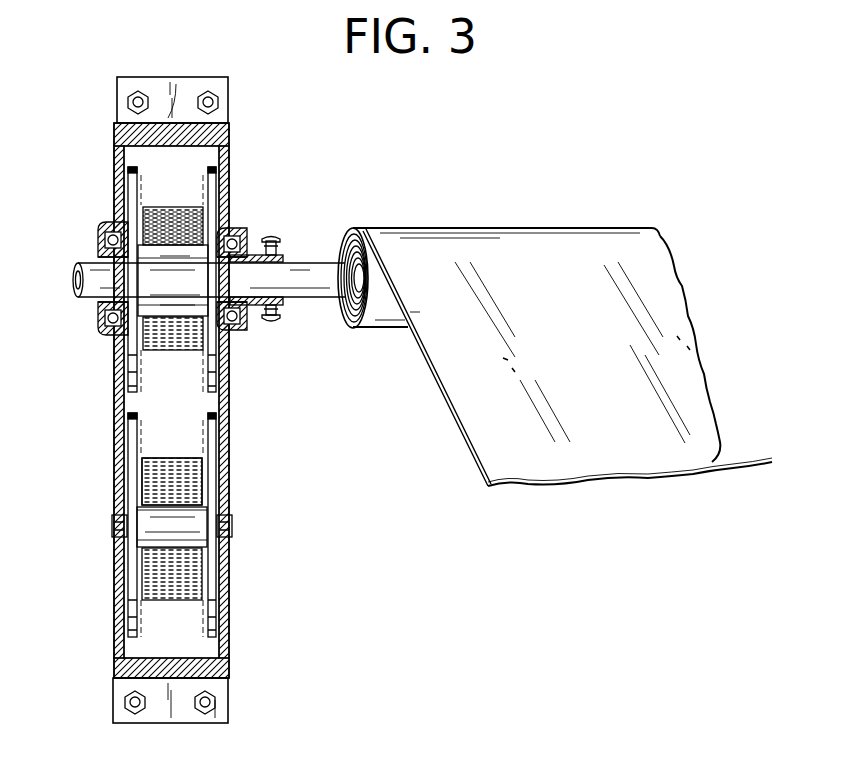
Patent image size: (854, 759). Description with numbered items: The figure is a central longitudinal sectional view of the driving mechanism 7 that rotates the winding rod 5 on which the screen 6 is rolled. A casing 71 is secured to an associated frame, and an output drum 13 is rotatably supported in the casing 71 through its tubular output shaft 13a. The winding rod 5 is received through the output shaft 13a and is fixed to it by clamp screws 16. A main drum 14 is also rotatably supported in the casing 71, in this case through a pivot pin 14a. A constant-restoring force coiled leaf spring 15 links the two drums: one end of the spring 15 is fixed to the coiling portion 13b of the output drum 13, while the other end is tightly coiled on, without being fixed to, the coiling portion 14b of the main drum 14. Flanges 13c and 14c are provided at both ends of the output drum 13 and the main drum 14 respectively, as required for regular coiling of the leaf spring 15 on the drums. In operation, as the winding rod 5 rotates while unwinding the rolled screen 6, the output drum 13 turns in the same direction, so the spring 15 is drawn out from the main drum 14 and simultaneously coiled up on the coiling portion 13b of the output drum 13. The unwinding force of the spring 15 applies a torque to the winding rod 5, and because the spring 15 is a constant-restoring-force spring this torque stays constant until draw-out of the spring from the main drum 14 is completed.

The winding rod 5 is at (73, 282).
The screen 6 is at (472, 422).
The driving mechanism 7 is at (240, 480).
The output drum 13 is at (150, 259).
The output shaft 13a is at (280, 255).
The coiling portion of output drum 13b is at (115, 340).
The flange 13c is at (133, 198).
The main drum 14 is at (197, 529).
The pivot pin 14a is at (232, 527).
The coiling portion of main drum 14b is at (150, 525).
The flange 14c is at (130, 615).
The constant-restoring force coiled leaf spring 15 is at (140, 472).
The clamp screw 16 is at (268, 318).
The casing 71 is at (232, 135).